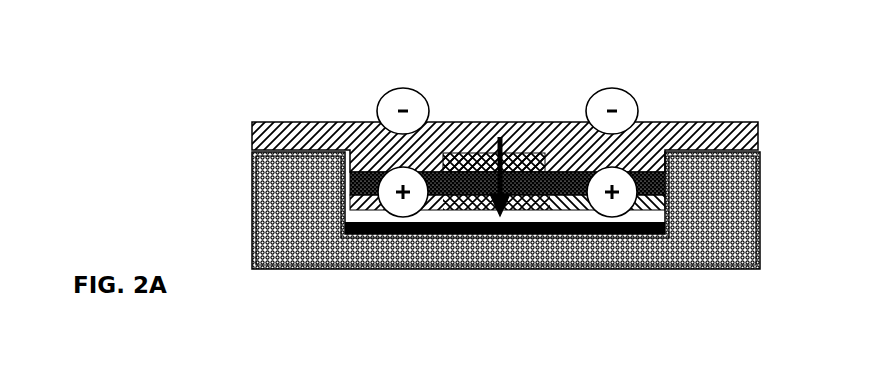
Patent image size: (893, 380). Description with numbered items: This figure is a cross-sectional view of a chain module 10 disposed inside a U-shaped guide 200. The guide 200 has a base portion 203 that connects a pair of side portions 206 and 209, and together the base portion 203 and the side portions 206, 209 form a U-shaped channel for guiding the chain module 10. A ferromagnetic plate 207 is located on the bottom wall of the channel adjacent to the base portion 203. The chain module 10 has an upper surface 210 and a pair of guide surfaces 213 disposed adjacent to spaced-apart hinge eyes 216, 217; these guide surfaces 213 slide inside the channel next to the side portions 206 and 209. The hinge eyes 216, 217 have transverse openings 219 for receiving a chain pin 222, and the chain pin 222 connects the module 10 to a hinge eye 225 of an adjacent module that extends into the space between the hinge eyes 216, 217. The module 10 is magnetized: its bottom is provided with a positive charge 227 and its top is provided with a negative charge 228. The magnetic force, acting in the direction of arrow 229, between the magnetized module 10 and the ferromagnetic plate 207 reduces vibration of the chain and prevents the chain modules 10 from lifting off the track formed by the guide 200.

The U-shaped guide 200 is at (216, 98).
The upper surface 210 is at (325, 122).
The arrow 229 is at (497, 137).
The chain pin 222 is at (548, 170).
The negative charge 228 is at (630, 93).
The chain module 10 is at (750, 139).
The side portion 209 is at (737, 169).
The guide surface 213 is at (345, 172).
The transverse opening 219 is at (653, 210).
The hinge eye 217 is at (647, 206).
The positive charge 227 is at (630, 205).
The base portion 203 is at (622, 252).
The ferromagnetic plate 207 is at (480, 224).
The hinge eye 225 is at (453, 210).
The hinge eye 216 is at (362, 197).
The side portion 206 is at (290, 207).